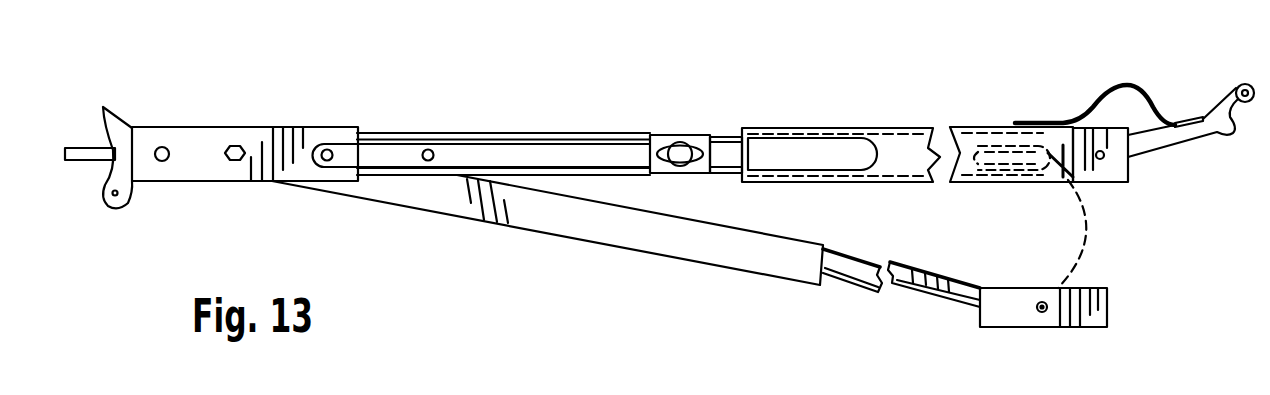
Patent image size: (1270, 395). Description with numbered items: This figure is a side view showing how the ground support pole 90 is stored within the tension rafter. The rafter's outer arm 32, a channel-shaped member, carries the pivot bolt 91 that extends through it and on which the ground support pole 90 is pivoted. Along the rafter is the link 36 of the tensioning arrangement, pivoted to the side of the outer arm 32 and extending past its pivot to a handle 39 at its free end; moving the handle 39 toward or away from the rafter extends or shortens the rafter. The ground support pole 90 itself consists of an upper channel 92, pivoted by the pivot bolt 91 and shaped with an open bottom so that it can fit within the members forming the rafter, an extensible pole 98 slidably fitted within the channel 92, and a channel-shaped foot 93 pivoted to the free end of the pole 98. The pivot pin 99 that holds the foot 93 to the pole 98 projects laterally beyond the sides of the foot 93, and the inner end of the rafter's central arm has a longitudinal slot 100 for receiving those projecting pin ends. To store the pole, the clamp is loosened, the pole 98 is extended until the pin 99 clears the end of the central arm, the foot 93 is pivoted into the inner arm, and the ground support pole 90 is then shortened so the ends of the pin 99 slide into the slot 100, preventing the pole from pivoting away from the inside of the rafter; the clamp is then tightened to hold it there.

The ground support pole 90 is at (628, 311).
The pivot bolt 91 is at (155, 154).
The outer arm 32 is at (218, 133).
The link 36 is at (528, 153).
The handle 39 is at (772, 152).
The upper channel 92 is at (517, 205).
The foot 93 is at (1013, 312).
The extensible pole 98 is at (918, 288).
The pivot pin 99 is at (1046, 311).
The longitudinal slot 100 is at (988, 132).